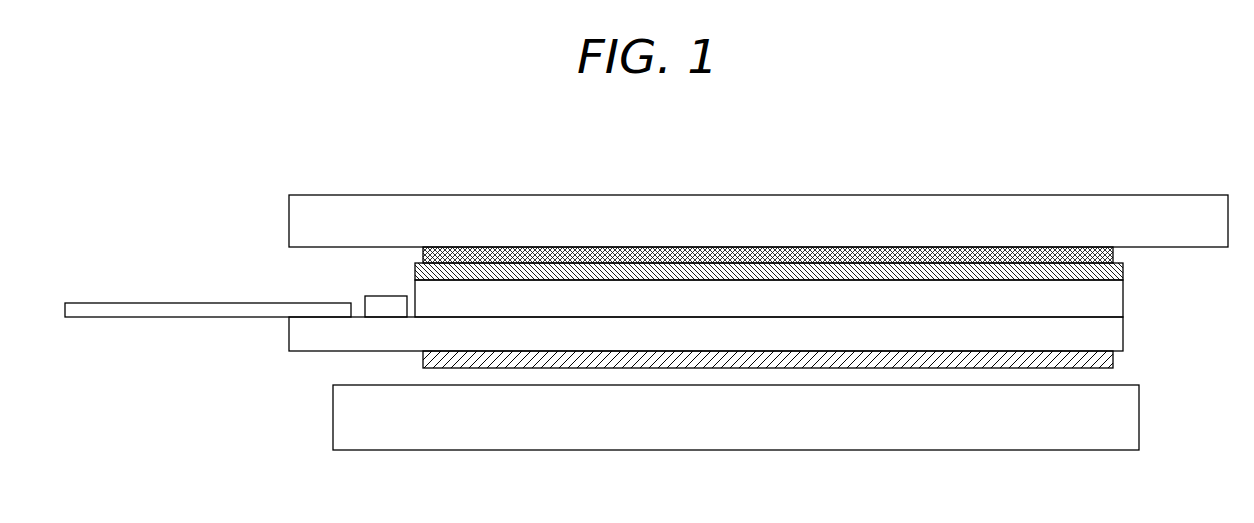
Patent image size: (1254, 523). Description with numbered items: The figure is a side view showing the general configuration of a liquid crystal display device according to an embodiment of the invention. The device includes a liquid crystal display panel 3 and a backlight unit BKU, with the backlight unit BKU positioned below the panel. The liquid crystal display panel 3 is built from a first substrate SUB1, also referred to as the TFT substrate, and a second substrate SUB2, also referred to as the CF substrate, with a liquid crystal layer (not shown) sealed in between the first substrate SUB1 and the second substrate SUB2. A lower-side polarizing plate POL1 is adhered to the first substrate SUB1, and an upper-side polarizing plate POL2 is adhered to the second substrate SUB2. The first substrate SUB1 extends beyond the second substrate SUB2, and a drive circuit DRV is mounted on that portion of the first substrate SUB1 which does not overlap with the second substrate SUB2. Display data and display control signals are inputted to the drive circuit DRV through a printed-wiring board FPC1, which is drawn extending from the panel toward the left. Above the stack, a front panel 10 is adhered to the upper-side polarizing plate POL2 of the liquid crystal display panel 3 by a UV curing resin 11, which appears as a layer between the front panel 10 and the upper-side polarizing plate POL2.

The front panel 10 is at (670, 195).
The UV curing resin 11 is at (1085, 263).
The liquid crystal display panel 3 is at (726, 322).
The upper-side polarizing plate POL2 is at (1007, 258).
The lower-side polarizing plate POL1 is at (1073, 360).
The second substrate SUB2 is at (888, 300).
The first substrate SUB1 is at (970, 333).
The printed-wiring board FPC1 is at (132, 310).
The drive circuit DRV is at (387, 310).
The backlight unit BKU is at (1127, 411).